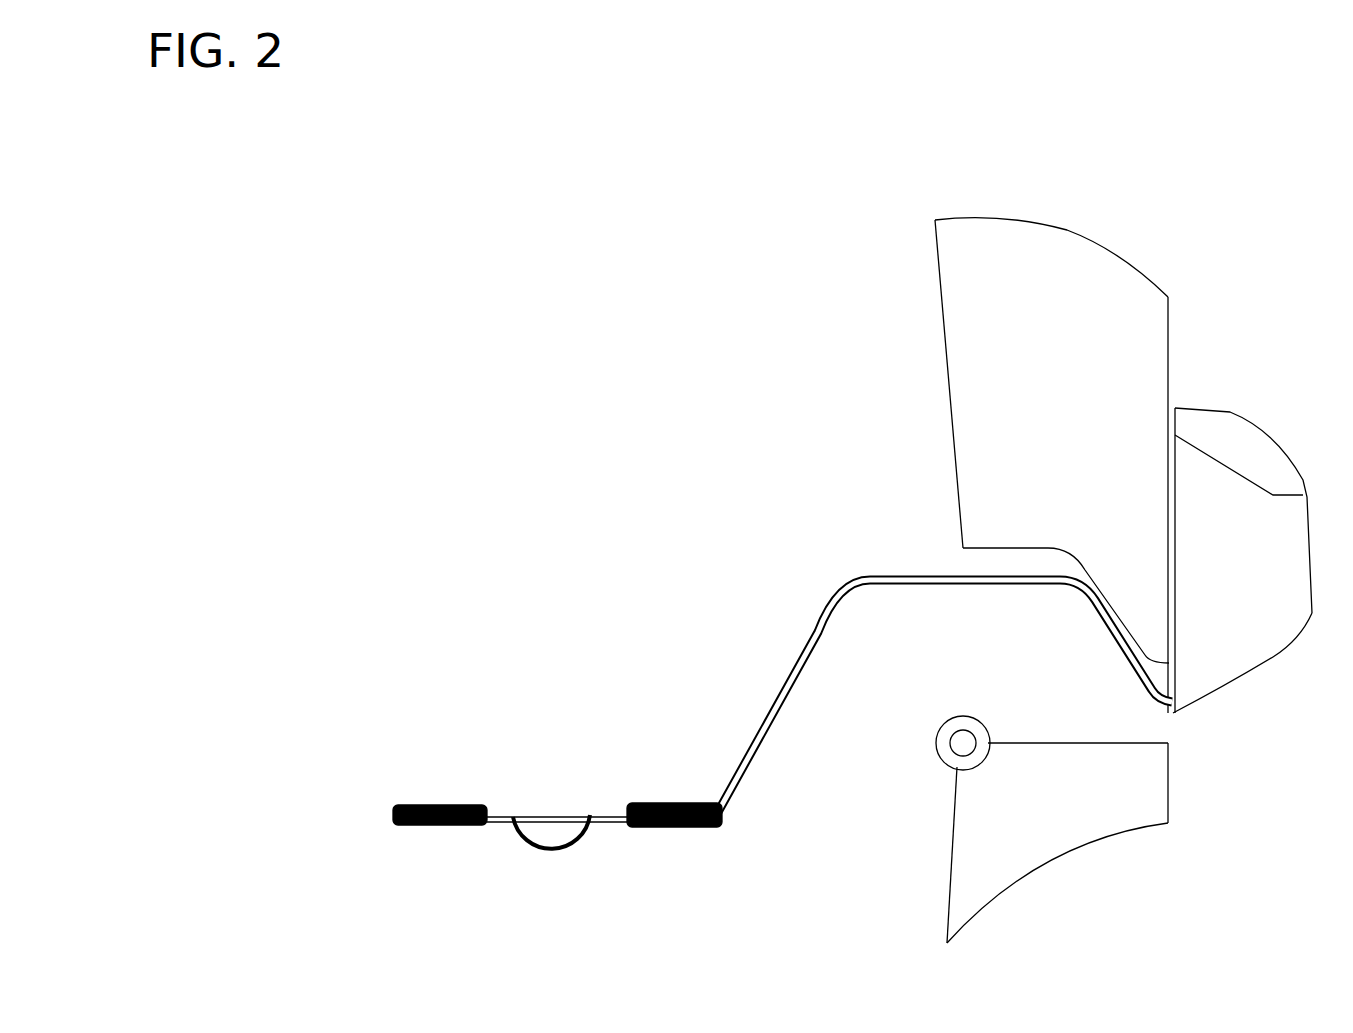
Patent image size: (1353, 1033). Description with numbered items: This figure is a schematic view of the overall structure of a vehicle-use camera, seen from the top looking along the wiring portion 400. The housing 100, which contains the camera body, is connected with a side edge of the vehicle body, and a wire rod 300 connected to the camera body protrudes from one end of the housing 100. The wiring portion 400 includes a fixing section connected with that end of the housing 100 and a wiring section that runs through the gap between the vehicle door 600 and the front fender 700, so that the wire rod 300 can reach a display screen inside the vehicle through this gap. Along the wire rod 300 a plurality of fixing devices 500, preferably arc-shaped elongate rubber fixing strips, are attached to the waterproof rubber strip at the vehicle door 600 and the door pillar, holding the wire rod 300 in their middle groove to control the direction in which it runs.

The housing 100 is at (1123, 422).
The wire rod 300 is at (451, 492).
The wiring portion 400 is at (934, 471).
The fixing device 500 is at (562, 479).
The vehicle door 600 is at (865, 537).
The front fender 700 is at (998, 397).